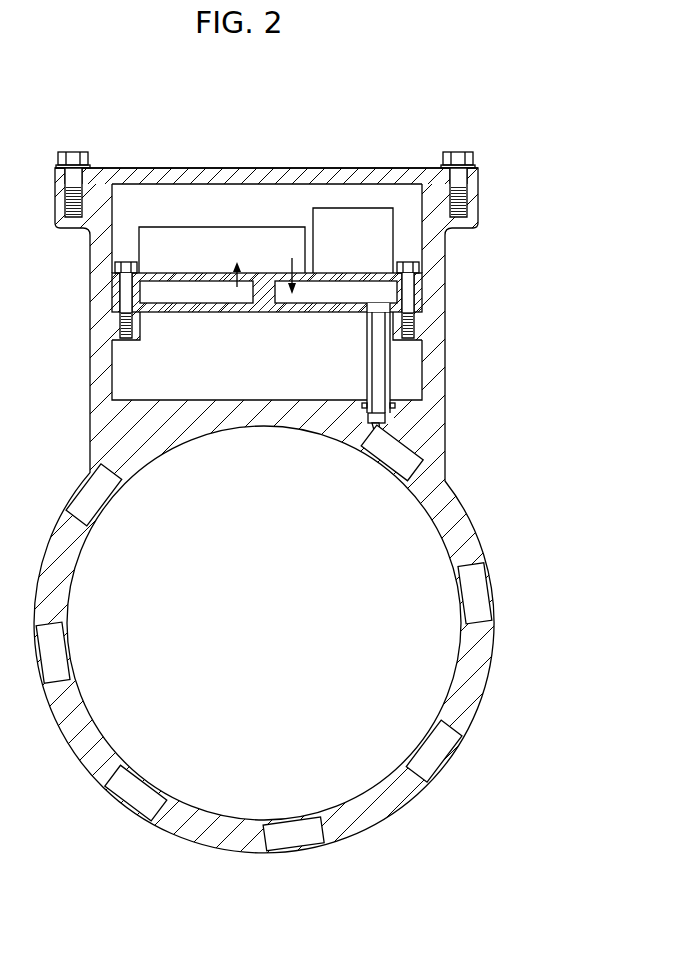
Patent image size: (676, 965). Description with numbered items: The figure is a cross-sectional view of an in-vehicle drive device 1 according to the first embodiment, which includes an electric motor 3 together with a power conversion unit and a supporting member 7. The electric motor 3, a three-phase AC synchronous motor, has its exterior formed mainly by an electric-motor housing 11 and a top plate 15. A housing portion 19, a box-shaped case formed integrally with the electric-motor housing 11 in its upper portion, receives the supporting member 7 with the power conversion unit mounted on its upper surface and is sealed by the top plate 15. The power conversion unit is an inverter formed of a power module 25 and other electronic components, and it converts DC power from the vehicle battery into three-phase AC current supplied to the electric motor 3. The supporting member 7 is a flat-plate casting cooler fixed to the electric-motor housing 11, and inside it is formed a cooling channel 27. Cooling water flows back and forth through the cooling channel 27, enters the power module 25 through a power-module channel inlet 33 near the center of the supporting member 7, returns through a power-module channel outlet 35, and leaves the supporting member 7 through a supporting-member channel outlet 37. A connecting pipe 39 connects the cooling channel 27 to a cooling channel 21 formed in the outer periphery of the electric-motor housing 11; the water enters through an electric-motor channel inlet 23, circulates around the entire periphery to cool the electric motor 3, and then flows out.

The in-vehicle drive device 1 is at (310, 455).
The electric motor 3 is at (310, 638).
The supporting member 7 is at (267, 303).
The electric-motor housing 11 is at (470, 507).
The top plate 15 is at (352, 168).
The housing portion 19 is at (444, 252).
The cooling channel 21 is at (478, 590).
The electric-motor channel inlet 23 is at (386, 419).
The power module 25 is at (230, 226).
The cooling channel 27 is at (150, 293).
The power-module channel inlet 33 is at (235, 266).
The power-module channel outlet 35 is at (300, 258).
The supporting-member channel outlet 37 is at (396, 295).
The connecting pipe 39 is at (388, 356).